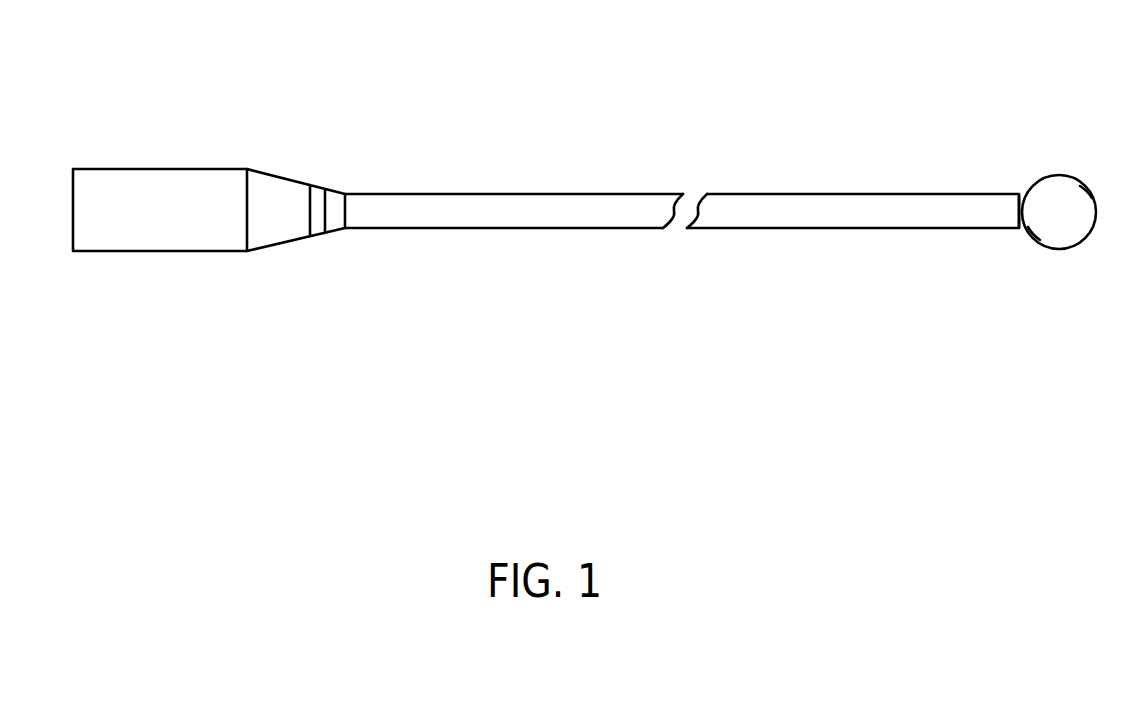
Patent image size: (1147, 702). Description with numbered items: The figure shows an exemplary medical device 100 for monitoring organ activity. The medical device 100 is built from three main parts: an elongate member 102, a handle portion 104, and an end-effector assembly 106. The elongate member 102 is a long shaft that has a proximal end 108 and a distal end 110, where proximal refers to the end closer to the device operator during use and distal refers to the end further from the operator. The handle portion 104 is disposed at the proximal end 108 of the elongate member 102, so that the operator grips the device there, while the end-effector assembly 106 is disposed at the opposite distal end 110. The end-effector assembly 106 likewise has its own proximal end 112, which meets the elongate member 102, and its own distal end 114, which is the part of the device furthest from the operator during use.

The medical device 100 is at (617, 80).
The elongate member 102 is at (447, 194).
The handle portion 104 is at (162, 169).
The end-effector assembly 106 is at (1057, 197).
The proximal end 108 is at (348, 228).
The distal end 110 is at (1017, 230).
The proximal end 112 is at (1028, 227).
The distal end 114 is at (1092, 198).